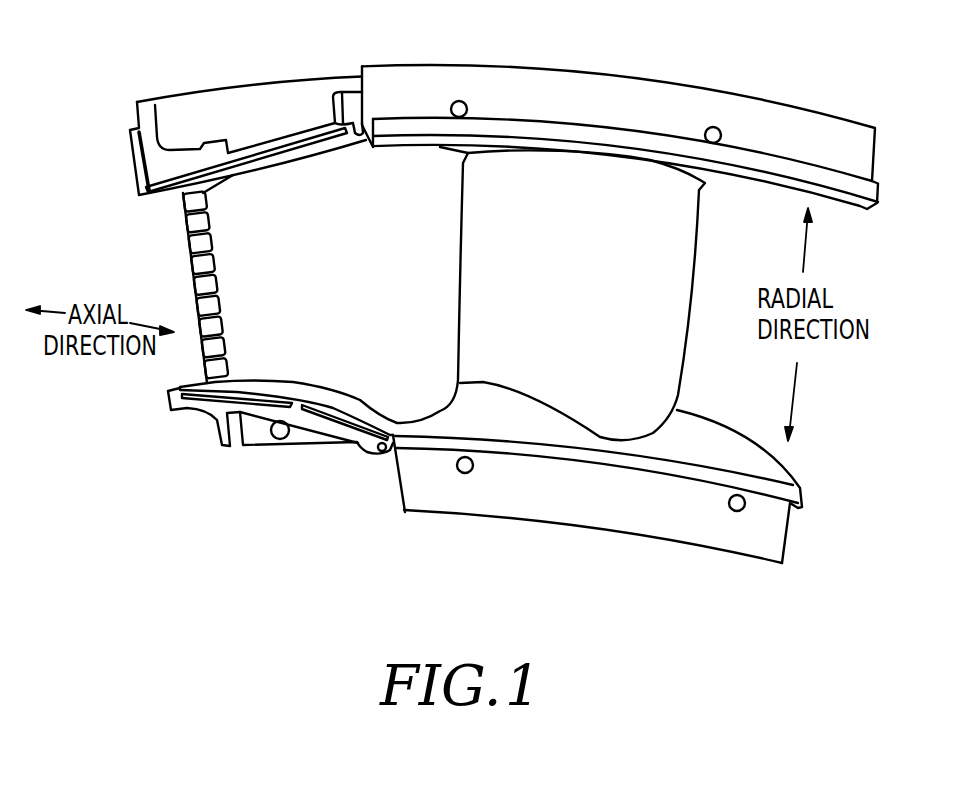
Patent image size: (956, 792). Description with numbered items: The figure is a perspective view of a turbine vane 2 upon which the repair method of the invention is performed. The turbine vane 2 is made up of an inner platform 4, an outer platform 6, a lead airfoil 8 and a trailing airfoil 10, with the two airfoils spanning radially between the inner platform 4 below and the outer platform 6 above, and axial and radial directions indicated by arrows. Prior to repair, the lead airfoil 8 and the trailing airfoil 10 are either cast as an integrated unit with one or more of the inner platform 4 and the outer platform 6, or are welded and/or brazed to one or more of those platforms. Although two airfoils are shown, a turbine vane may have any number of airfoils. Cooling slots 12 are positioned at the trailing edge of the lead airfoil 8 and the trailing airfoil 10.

The turbine vane 2 is at (160, 64).
The inner platform 4 is at (472, 423).
The outer platform 6 is at (397, 130).
The lead airfoil 8 is at (558, 284).
The trailing airfoil 10 is at (329, 269).
The cooling slots 12 is at (188, 220).